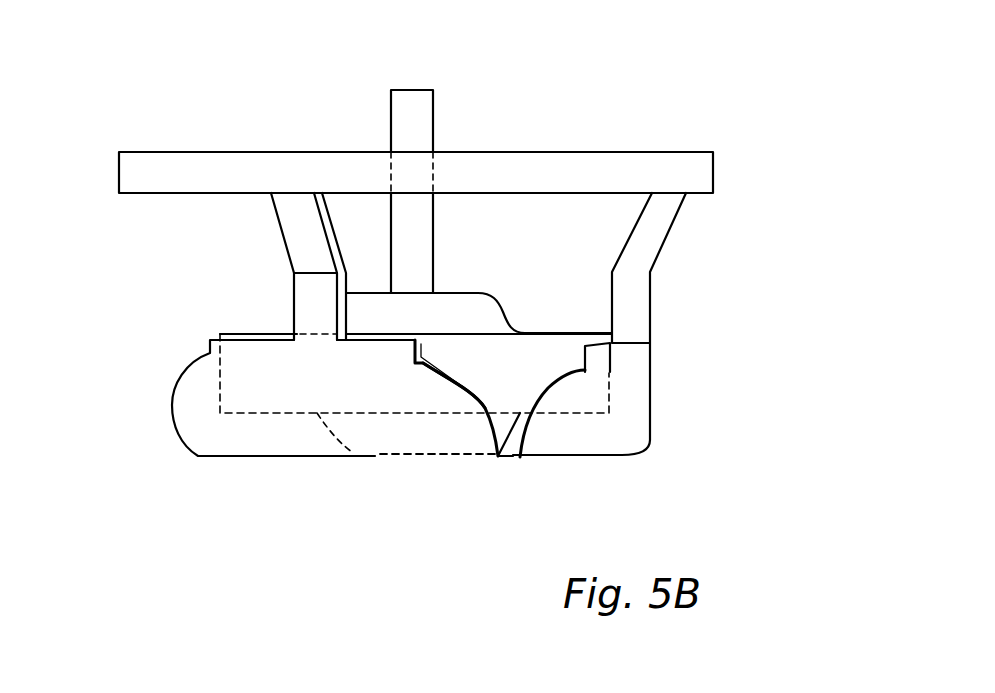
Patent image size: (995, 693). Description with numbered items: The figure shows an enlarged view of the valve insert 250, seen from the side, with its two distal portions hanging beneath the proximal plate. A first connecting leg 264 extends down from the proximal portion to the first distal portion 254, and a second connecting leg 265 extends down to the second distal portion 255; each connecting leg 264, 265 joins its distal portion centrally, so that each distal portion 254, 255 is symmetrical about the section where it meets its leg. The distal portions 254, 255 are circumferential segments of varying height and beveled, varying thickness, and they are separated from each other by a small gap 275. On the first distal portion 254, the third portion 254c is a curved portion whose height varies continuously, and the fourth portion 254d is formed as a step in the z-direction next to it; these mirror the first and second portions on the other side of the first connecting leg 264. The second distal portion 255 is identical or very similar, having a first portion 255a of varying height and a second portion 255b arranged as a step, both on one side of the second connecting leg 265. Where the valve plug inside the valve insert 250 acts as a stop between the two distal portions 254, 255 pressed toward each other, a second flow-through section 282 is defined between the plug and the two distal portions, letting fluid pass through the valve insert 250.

The valve insert 250 is at (452, 272).
The first connecting leg 264 is at (307, 257).
The second connecting leg 265 is at (635, 298).
The first distal portion 254 is at (323, 436).
The third portion 254c is at (447, 388).
The fourth portion 254d is at (408, 346).
The gap 275 is at (503, 448).
The second flow-through section 282 is at (513, 440).
The second distal portion 255 is at (640, 440).
The first portion 255a is at (563, 397).
The second portion 255b is at (594, 368).